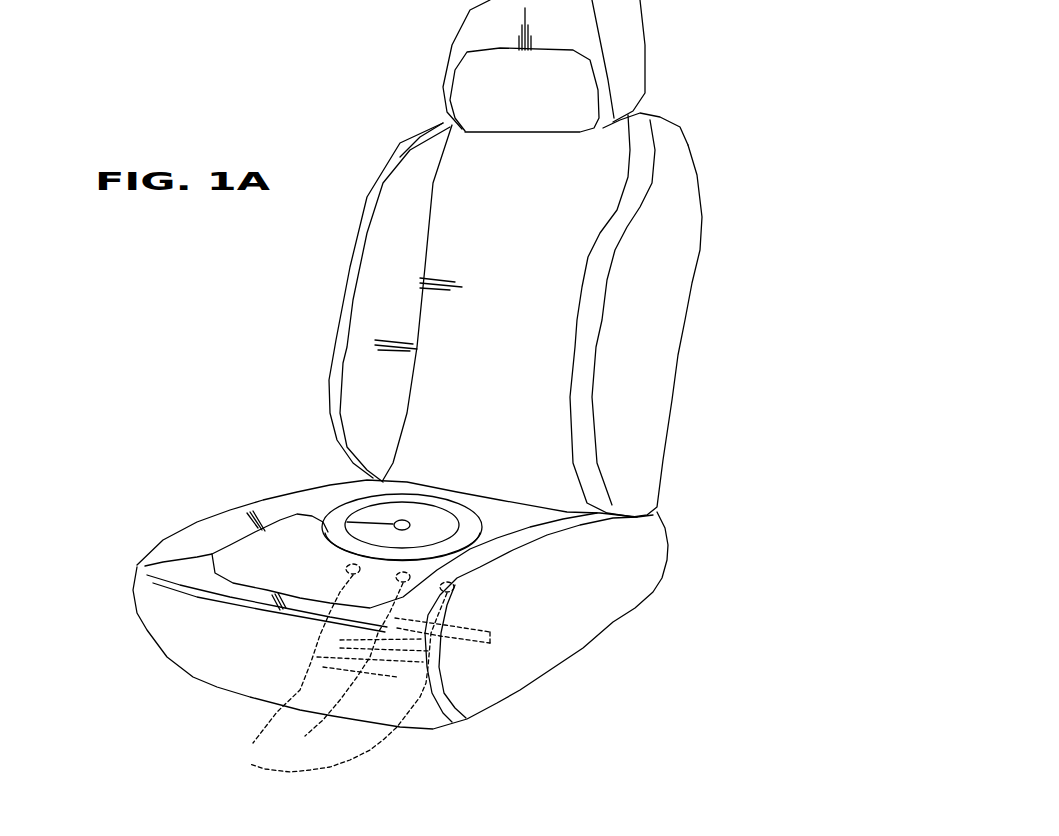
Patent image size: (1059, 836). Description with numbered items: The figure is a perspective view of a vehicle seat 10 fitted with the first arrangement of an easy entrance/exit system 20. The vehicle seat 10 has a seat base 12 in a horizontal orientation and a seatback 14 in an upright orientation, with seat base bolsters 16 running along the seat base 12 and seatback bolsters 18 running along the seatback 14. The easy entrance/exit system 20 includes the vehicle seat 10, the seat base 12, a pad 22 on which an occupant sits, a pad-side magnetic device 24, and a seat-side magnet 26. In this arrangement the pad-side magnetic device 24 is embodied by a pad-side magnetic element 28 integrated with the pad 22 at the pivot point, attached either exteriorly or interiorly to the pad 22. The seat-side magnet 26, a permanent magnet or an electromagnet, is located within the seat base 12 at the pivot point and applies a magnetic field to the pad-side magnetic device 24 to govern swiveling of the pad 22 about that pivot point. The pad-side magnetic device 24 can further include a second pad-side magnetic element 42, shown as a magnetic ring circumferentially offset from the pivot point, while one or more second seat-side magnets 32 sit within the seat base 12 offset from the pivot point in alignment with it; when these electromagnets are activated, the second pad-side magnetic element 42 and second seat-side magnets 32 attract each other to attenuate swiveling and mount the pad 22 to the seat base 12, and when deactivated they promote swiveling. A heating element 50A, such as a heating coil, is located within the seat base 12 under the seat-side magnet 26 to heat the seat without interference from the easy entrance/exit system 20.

The vehicle seat 10 is at (411, 388).
The seat base 12 is at (400, 640).
The seatback 14 is at (556, 315).
The seat base bolsters 16 is at (396, 584).
The seatback bolsters 18 is at (561, 316).
The easy entrance/exit system 20 is at (416, 584).
The pad 22 is at (298, 525).
The pad-side magnetic device 24 is at (183, 543).
The pad-side magnetic element 28 is at (232, 588).
The seat-side magnet 26 is at (340, 669).
The second seat-side magnet 32 is at (333, 675).
The second pad-side magnetic element 42 is at (403, 487).
The heating element 50A is at (503, 657).